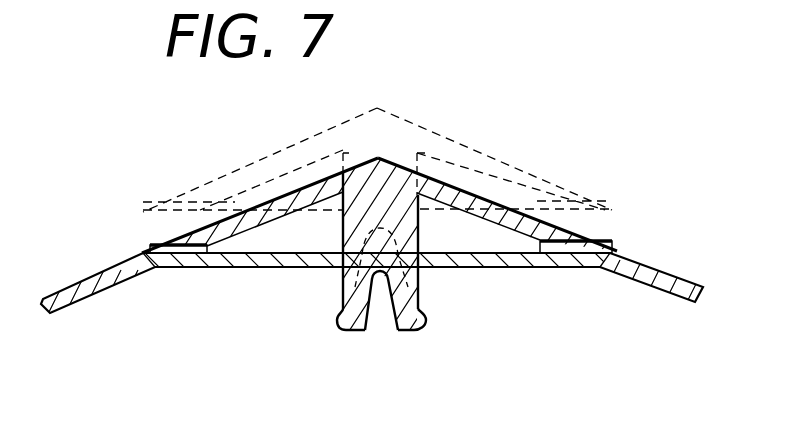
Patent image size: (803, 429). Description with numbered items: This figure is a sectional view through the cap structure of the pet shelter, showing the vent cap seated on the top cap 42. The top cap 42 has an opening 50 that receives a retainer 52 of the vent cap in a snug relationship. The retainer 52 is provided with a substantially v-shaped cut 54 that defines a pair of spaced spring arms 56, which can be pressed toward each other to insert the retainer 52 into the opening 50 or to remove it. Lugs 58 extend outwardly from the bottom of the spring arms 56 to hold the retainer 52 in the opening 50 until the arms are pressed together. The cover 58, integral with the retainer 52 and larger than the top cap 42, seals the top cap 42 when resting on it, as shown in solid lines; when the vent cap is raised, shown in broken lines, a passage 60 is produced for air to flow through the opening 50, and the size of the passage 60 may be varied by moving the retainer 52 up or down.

The top cap 42 is at (586, 268).
The opening 50 is at (418, 250).
The retainer 52 is at (343, 213).
The v-shaped cut 54 is at (337, 314).
The spring arms 56 is at (338, 281).
The lugs 58 is at (577, 241).
The passage 60 is at (184, 244).